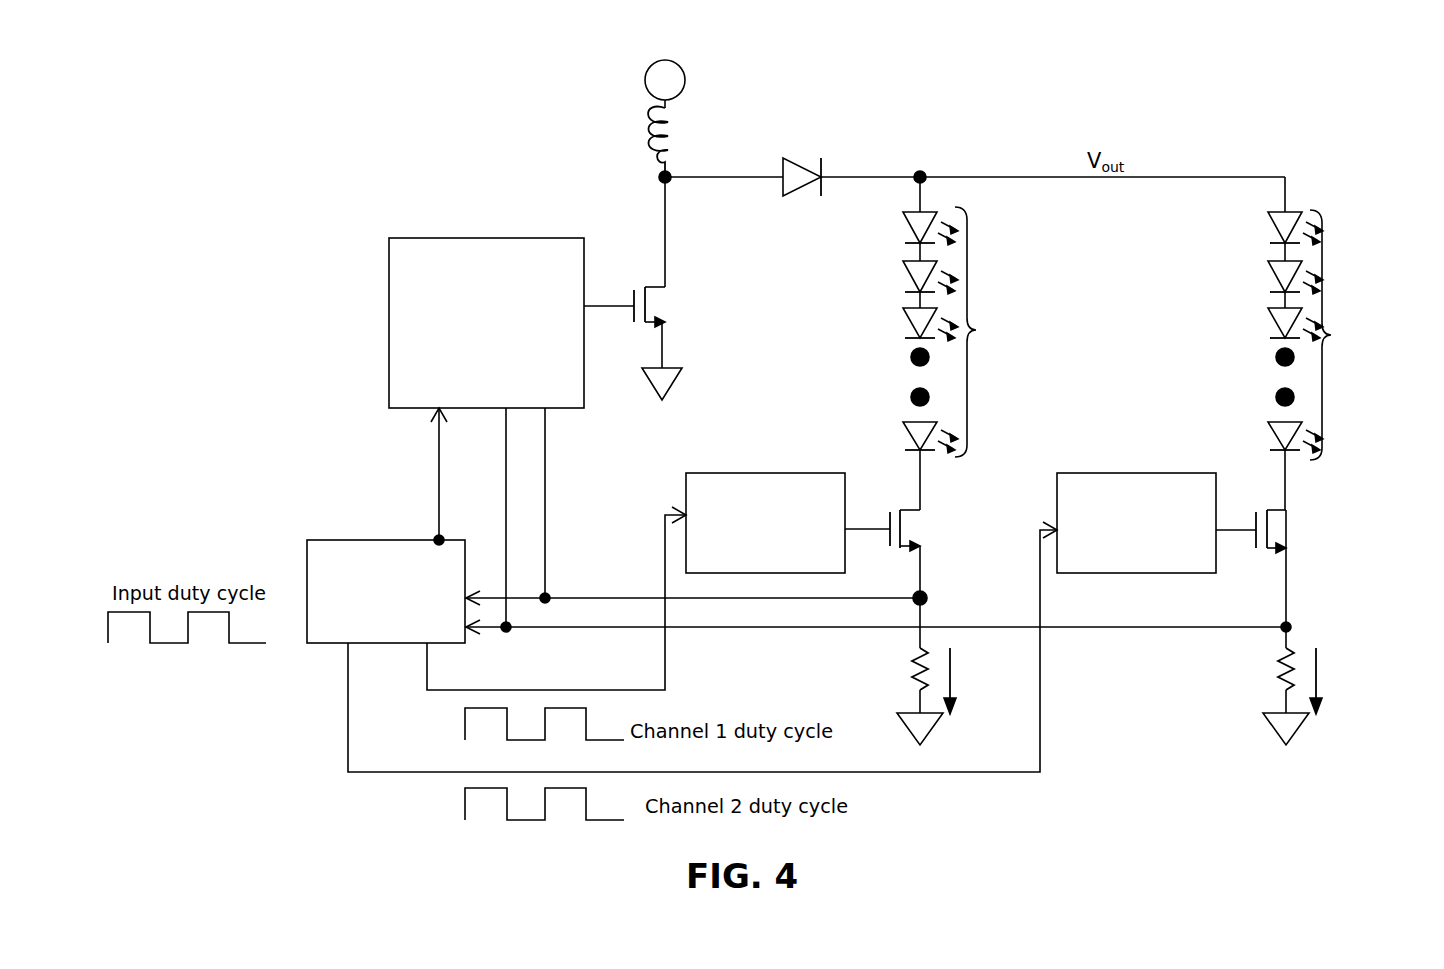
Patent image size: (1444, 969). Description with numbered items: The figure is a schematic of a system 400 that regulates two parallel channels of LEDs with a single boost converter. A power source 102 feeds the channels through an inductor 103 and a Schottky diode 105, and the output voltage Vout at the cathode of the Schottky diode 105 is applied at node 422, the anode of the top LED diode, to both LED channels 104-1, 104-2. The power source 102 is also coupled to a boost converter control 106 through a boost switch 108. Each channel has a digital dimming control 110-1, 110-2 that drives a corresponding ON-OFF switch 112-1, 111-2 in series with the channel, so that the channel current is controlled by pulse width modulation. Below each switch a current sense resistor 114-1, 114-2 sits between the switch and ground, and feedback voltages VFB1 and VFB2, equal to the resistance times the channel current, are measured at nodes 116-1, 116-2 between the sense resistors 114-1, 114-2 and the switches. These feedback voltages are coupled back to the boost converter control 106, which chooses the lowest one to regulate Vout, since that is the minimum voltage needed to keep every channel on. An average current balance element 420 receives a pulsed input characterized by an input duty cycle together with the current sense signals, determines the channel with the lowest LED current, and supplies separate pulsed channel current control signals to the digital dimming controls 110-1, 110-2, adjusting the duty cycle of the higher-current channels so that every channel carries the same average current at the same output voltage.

The system 400 is at (173, 56).
The power source 102 is at (684, 85).
The inductor 103 is at (677, 130).
The Schottky diode 105 is at (800, 167).
The boost converter control 106 is at (458, 237).
The boost switch 108 is at (663, 306).
The node 422 is at (926, 173).
The LED channel 104-1 is at (976, 330).
The LED channel 104-2 is at (1331, 335).
The digital dimming control 110-1 is at (738, 472).
The digital dimming control 110-2 is at (1110, 472).
The ON-OFF switch 112-1 is at (928, 522).
The ON-OFF switch channel 2 111-2 is at (1298, 518).
The node 116-1 is at (927, 594).
The node 116-2 is at (1292, 624).
The current sense resistor 114-1 is at (913, 672).
The current sense resistor 114-2 is at (1280, 682).
The average current balance element 420 is at (387, 539).